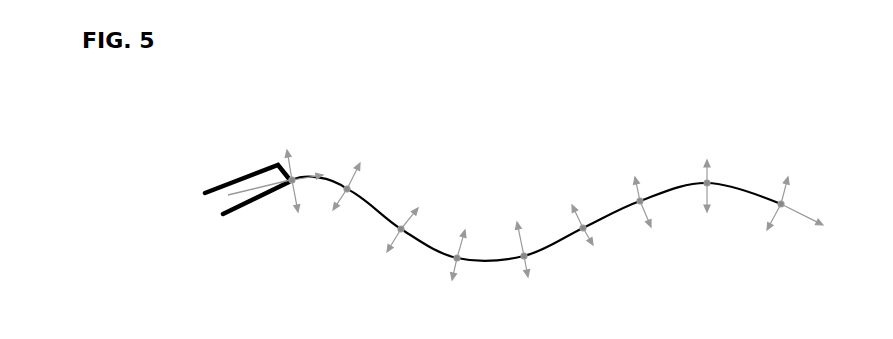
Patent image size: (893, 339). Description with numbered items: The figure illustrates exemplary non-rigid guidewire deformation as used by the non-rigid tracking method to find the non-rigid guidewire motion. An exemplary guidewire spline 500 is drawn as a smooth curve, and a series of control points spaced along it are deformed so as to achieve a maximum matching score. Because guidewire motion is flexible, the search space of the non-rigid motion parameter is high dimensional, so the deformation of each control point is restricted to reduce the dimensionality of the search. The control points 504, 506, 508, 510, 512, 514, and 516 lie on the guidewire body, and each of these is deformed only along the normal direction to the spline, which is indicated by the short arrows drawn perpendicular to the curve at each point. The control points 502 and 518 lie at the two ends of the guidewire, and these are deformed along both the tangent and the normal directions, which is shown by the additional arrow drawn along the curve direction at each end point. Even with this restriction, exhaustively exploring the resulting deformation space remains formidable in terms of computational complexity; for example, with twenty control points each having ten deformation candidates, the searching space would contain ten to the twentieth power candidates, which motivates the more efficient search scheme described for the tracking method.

The guidewire spline 500 is at (320, 150).
The control point at end of guidewire 502 is at (264, 177).
The control point 504 is at (372, 175).
The control point 506 is at (390, 241).
The control point 508 is at (466, 266).
The control point 510 is at (536, 262).
The control point 512 is at (601, 240).
The control point 514 is at (628, 183).
The control point 516 is at (721, 175).
The control point at end of guidewire 518 is at (808, 199).